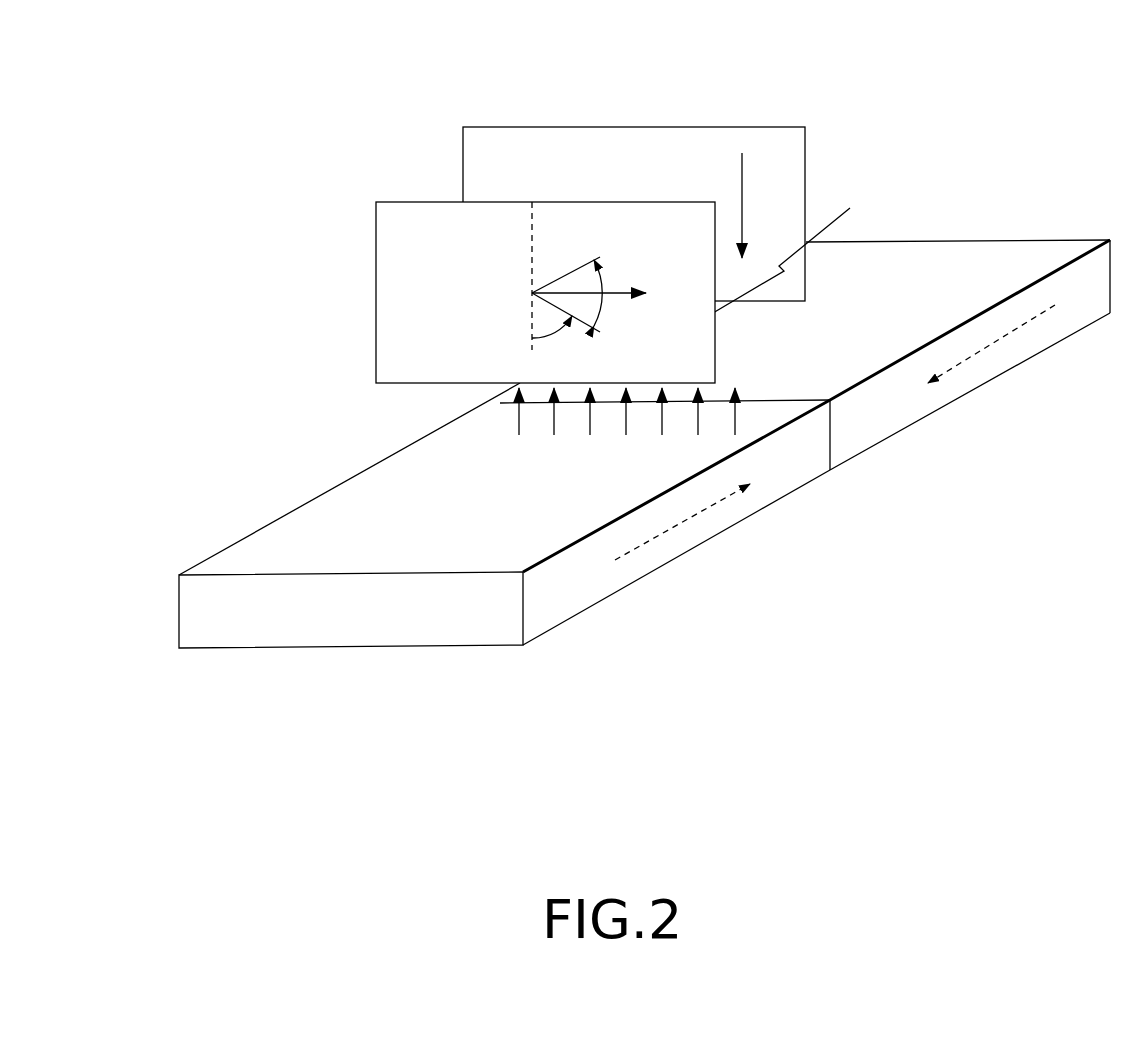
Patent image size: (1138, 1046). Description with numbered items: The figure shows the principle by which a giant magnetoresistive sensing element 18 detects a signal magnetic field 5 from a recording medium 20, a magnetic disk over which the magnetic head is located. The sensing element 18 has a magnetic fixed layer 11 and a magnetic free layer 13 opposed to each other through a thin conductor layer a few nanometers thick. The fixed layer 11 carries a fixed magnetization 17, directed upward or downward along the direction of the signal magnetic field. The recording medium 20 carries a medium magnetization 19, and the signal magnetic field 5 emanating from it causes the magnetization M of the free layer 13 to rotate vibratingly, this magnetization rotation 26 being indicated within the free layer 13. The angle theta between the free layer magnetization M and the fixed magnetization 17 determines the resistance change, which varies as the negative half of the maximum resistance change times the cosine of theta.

The signal magnetic field 5 is at (677, 440).
The magnetic fixed layer 11 is at (483, 168).
The magnetic free layer 13 is at (410, 303).
The fixed magnetization 17 is at (743, 200).
The giant magnetoresistive sensing element 18 is at (792, 283).
The medium magnetization 19 is at (705, 508).
The recording medium 20 is at (430, 633).
The magnetization rotation 26 is at (603, 283).